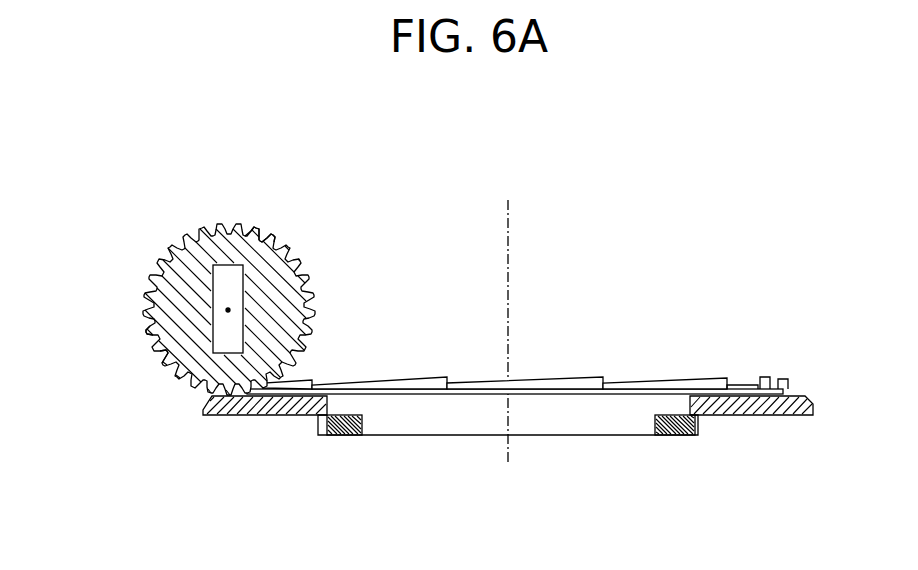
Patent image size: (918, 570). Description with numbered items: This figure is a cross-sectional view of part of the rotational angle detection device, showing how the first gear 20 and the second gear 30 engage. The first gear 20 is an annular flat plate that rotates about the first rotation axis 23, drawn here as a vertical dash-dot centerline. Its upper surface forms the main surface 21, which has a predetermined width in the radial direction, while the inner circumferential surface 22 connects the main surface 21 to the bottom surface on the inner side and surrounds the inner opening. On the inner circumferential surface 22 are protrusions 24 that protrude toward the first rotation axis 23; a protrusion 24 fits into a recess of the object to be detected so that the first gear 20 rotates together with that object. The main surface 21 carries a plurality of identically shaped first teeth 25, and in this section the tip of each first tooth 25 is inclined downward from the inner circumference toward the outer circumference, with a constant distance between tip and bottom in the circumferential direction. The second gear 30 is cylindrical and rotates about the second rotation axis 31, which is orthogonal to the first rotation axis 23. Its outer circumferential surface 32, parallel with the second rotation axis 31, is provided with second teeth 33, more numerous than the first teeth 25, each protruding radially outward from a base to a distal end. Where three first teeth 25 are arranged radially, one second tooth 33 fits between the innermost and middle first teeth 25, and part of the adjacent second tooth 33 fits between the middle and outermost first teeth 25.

The first gear 20 is at (657, 358).
The main surface 21 is at (713, 377).
The inner circumferential surface 22 is at (327, 405).
The first rotation axis 23 is at (510, 222).
The protrusion 24 is at (670, 437).
The first teeth 25 is at (806, 388).
The second gear 30 is at (146, 230).
The second rotation axis 31 is at (232, 309).
The outer circumferential surface 32 is at (267, 242).
The second teeth 33 is at (161, 361).